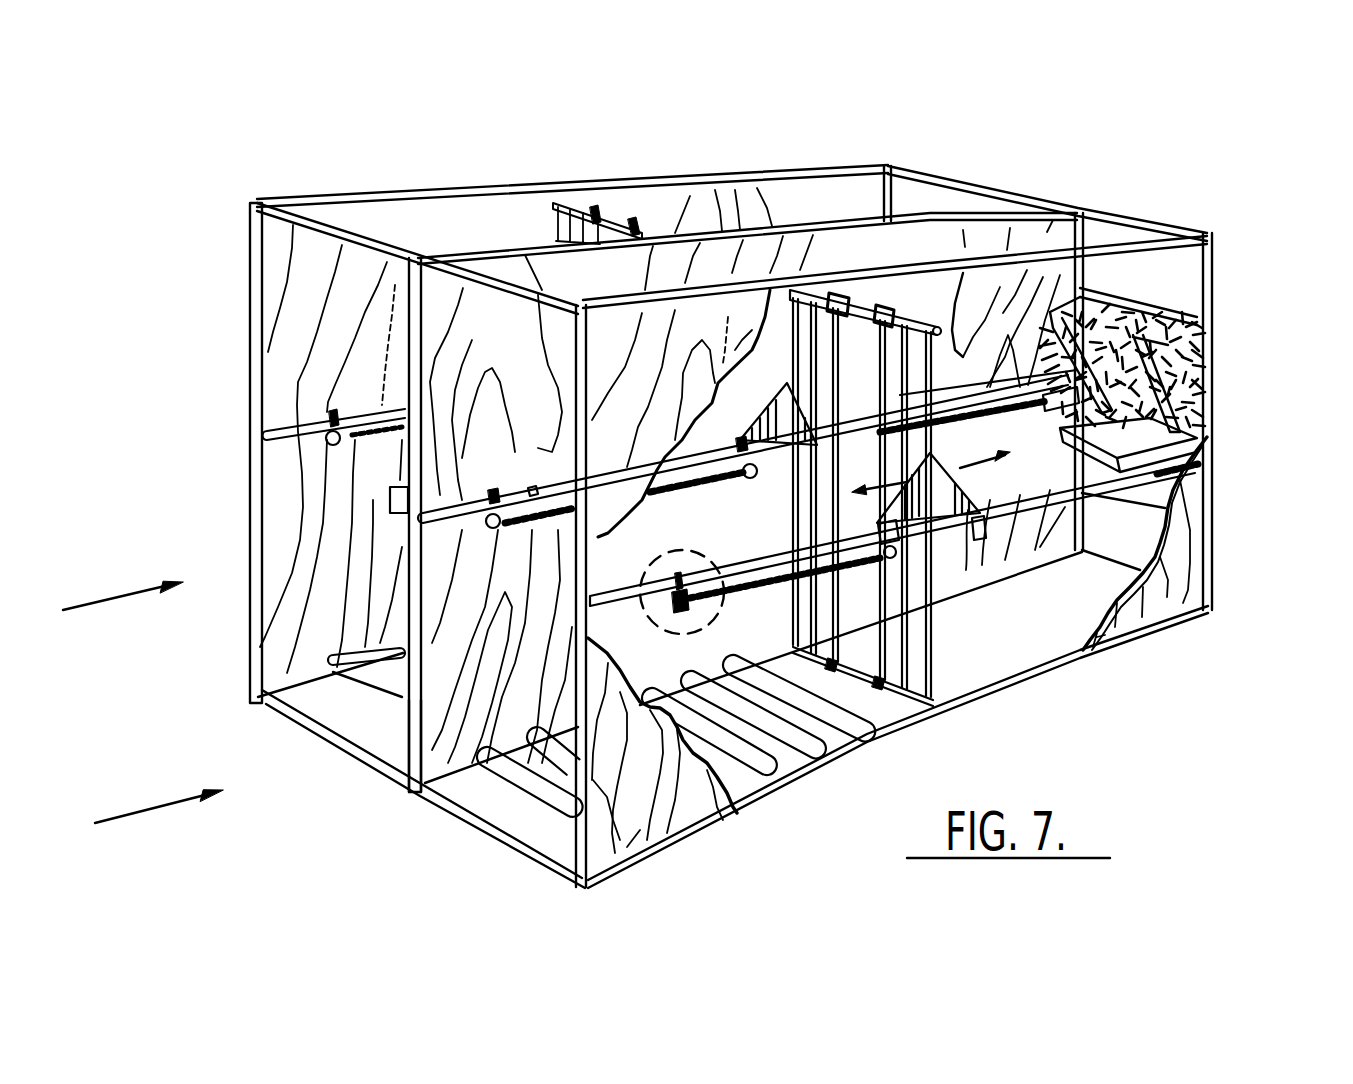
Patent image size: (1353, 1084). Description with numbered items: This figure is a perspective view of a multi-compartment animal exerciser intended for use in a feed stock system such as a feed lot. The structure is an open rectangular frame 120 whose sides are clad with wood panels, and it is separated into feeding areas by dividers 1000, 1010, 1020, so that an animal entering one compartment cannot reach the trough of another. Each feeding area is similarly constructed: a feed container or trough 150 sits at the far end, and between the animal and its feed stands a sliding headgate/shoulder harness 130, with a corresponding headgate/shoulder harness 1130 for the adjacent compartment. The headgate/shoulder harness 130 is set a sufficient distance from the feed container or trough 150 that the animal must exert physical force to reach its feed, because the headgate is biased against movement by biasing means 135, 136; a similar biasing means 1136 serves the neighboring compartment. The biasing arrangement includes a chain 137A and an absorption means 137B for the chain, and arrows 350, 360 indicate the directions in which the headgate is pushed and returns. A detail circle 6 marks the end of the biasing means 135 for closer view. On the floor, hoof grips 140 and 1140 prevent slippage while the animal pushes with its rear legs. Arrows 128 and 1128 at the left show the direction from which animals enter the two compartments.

The cage frame 120 is at (1323, 170).
The divider 1020 is at (273, 330).
The headgate/shoulder harness 1130 is at (617, 213).
The headgate/shoulder harness 130 is at (892, 317).
The side rod 1136 is at (375, 437).
The biasing means 136 is at (672, 483).
The biasing means 135 is at (740, 597).
The detail view circle 6 is at (705, 553).
The arrow 360 is at (893, 558).
The arrow 350 is at (980, 432).
The feed container or trough 150 is at (1210, 330).
The absorption means for chain 137B is at (1212, 447).
The chain 137A is at (1037, 573).
The hoof grips 140 is at (803, 780).
The hoof grips 1140 is at (340, 665).
The divider 1010 is at (392, 770).
The divider 1000 is at (627, 862).
The direction arrow 1128 is at (93, 610).
The direction arrow 128 is at (163, 807).